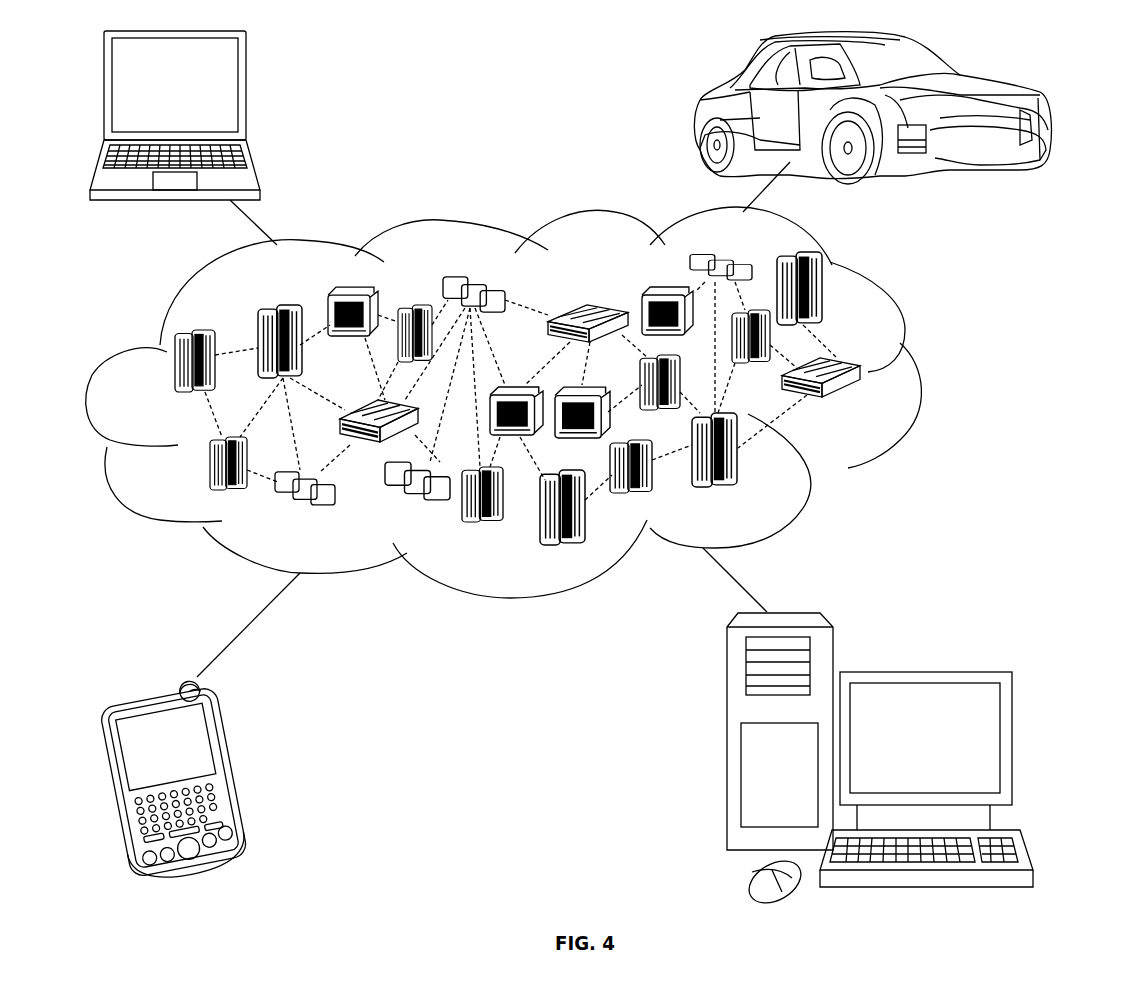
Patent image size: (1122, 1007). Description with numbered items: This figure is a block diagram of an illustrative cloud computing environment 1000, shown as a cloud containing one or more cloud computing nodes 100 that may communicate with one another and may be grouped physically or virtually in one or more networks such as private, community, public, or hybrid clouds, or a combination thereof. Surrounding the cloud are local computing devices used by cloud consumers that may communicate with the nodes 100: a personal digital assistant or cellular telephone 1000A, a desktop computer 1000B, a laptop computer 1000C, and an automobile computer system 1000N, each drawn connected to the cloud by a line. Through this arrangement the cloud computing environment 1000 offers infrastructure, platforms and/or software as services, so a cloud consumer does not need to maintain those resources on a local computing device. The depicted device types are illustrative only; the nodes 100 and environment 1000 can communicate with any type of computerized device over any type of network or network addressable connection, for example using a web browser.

The cloud computing environment 1000 is at (927, 378).
The cloud computing nodes 100 is at (880, 416).
The personal digital assistant (PDA) or cellular telephone 1000A is at (237, 770).
The desktop computer 1000B is at (920, 672).
The laptop computer 1000C is at (246, 93).
The automobile computer system 1000N is at (695, 115).